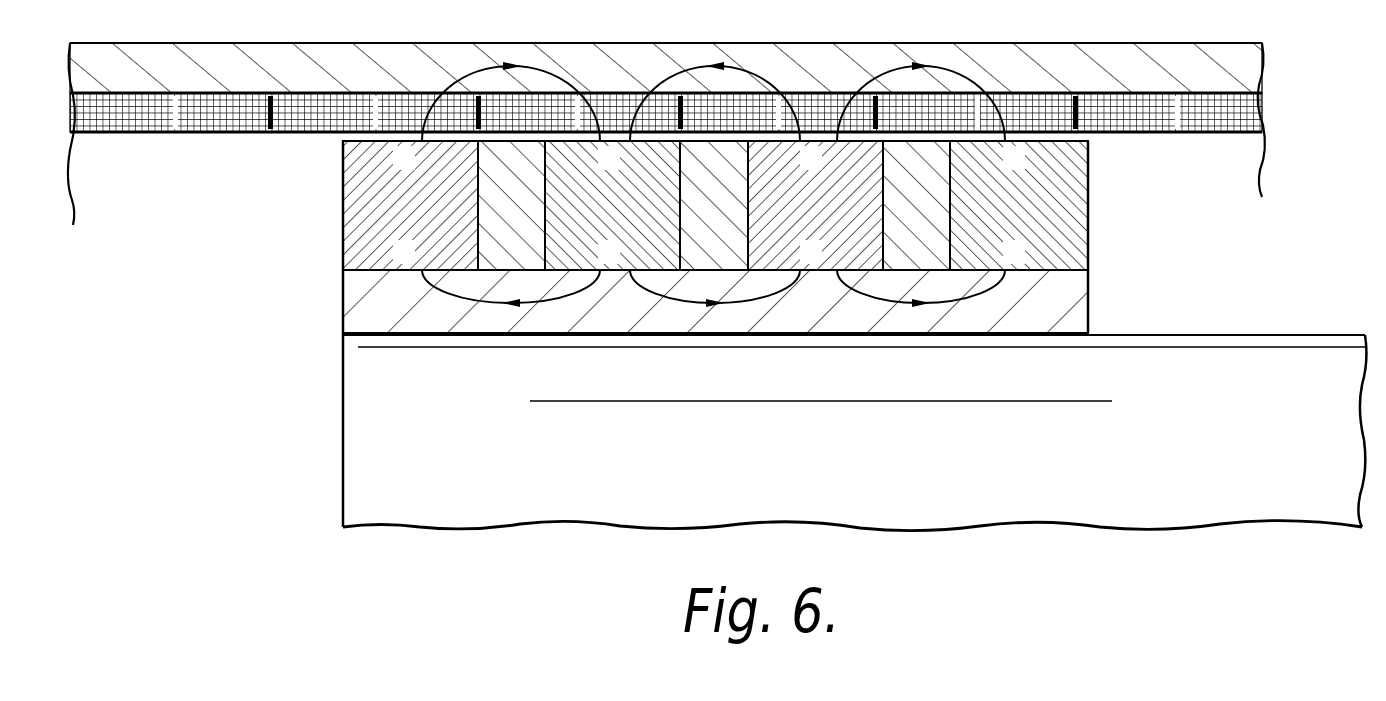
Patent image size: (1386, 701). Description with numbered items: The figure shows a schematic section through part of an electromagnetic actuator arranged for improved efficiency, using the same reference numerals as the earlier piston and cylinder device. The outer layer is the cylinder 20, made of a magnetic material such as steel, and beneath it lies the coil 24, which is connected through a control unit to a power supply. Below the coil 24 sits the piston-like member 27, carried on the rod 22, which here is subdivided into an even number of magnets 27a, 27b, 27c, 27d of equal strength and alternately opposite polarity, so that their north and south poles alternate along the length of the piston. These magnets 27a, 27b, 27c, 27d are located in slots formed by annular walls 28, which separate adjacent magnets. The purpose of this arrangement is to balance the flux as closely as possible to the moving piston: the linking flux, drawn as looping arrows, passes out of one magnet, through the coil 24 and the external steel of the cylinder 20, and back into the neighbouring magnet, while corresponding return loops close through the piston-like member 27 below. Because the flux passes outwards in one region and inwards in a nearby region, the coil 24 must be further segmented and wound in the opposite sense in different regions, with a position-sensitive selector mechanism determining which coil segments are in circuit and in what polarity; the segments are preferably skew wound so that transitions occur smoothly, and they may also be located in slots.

The cylinder 20 is at (1268, 72).
The rod 22 is at (823, 466).
The coil 24 is at (1266, 110).
The piston-like member 27 is at (1090, 312).
The magnet 27a is at (1020, 265).
The magnet 27b is at (815, 265).
The magnet 27c is at (612, 265).
The magnet 27d is at (350, 213).
The annular walls 28 is at (525, 258).